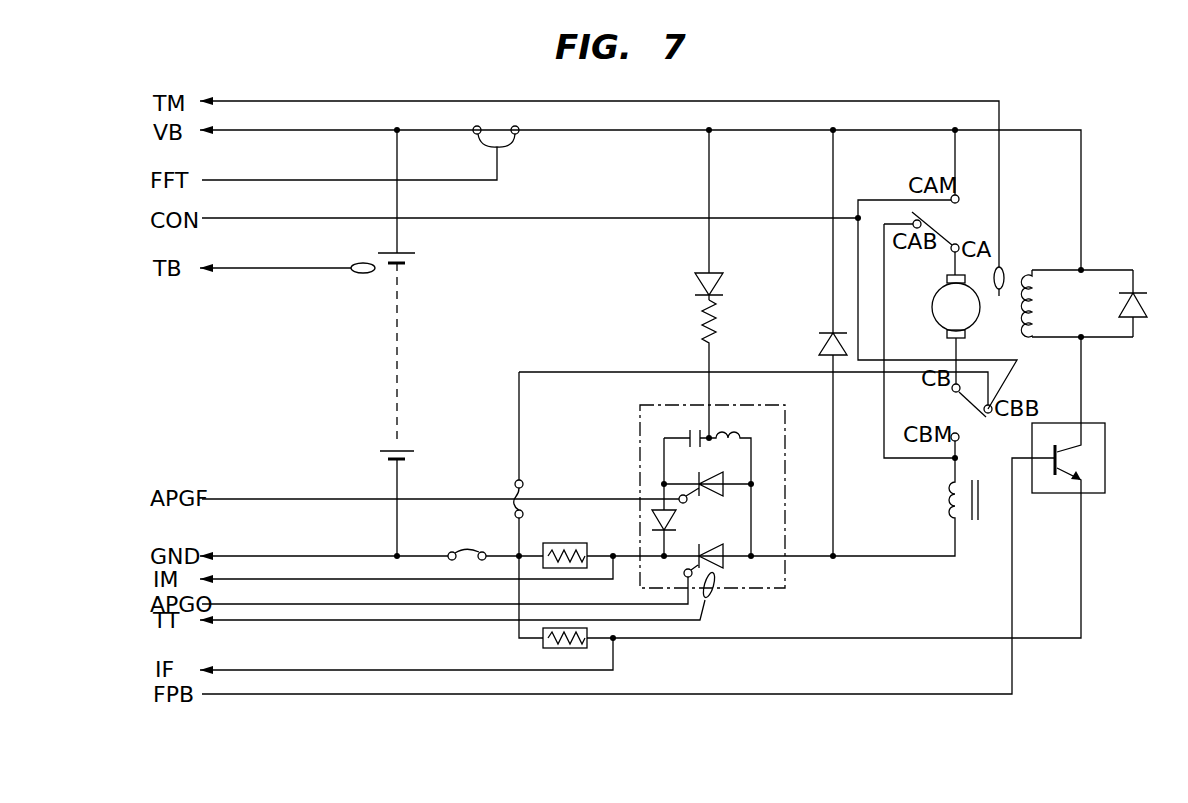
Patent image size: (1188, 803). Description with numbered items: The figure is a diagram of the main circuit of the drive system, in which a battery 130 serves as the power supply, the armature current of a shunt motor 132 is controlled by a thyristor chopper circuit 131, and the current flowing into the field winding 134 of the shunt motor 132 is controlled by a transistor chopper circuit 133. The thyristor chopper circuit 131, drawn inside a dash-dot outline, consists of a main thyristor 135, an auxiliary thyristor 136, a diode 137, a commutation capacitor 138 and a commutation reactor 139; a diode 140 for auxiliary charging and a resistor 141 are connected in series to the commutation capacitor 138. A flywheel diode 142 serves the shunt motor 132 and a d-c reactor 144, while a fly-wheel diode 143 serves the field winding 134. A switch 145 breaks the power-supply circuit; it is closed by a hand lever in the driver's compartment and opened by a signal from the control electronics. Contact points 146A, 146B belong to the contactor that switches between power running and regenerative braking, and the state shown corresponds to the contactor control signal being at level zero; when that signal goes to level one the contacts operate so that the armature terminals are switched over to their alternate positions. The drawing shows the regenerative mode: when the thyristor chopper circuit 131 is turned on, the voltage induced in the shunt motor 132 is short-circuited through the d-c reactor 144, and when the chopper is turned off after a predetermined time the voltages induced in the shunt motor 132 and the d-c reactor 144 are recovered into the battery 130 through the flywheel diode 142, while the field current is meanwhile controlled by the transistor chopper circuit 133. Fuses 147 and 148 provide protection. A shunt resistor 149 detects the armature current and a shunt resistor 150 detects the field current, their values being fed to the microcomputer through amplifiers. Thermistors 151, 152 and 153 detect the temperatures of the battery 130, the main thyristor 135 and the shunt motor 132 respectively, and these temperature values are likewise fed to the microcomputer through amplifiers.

The battery 130 is at (400, 450).
The thyristor chopper circuit 131 is at (785, 525).
The shunt motor 132 is at (970, 320).
The transistor chopper circuit 133 is at (1105, 493).
The field winding 134 is at (1037, 272).
The main thyristor 135 is at (706, 550).
The auxiliary thyristor 136 is at (707, 474).
The diode 137 is at (677, 522).
The commutation capacitor 138 is at (688, 433).
The commutation reactor 139 is at (728, 434).
The diode for auxiliary charging 140 is at (722, 290).
The resistor 141 is at (718, 322).
The flywheel diode 142 is at (829, 332).
The fly-wheel diode 143 is at (1140, 305).
The d-c reactor 144 is at (950, 506).
The switch 145 is at (519, 140).
The contact point 146A is at (945, 236).
The contact point 146B is at (964, 399).
The fuse 147 is at (467, 552).
The fuse 148 is at (524, 494).
The shunt resistor 149 is at (562, 543).
The shunt resistor 150 is at (540, 646).
The thermistor 151 is at (357, 273).
The thermistor 152 is at (715, 590).
The thermistor 153 is at (1005, 296).